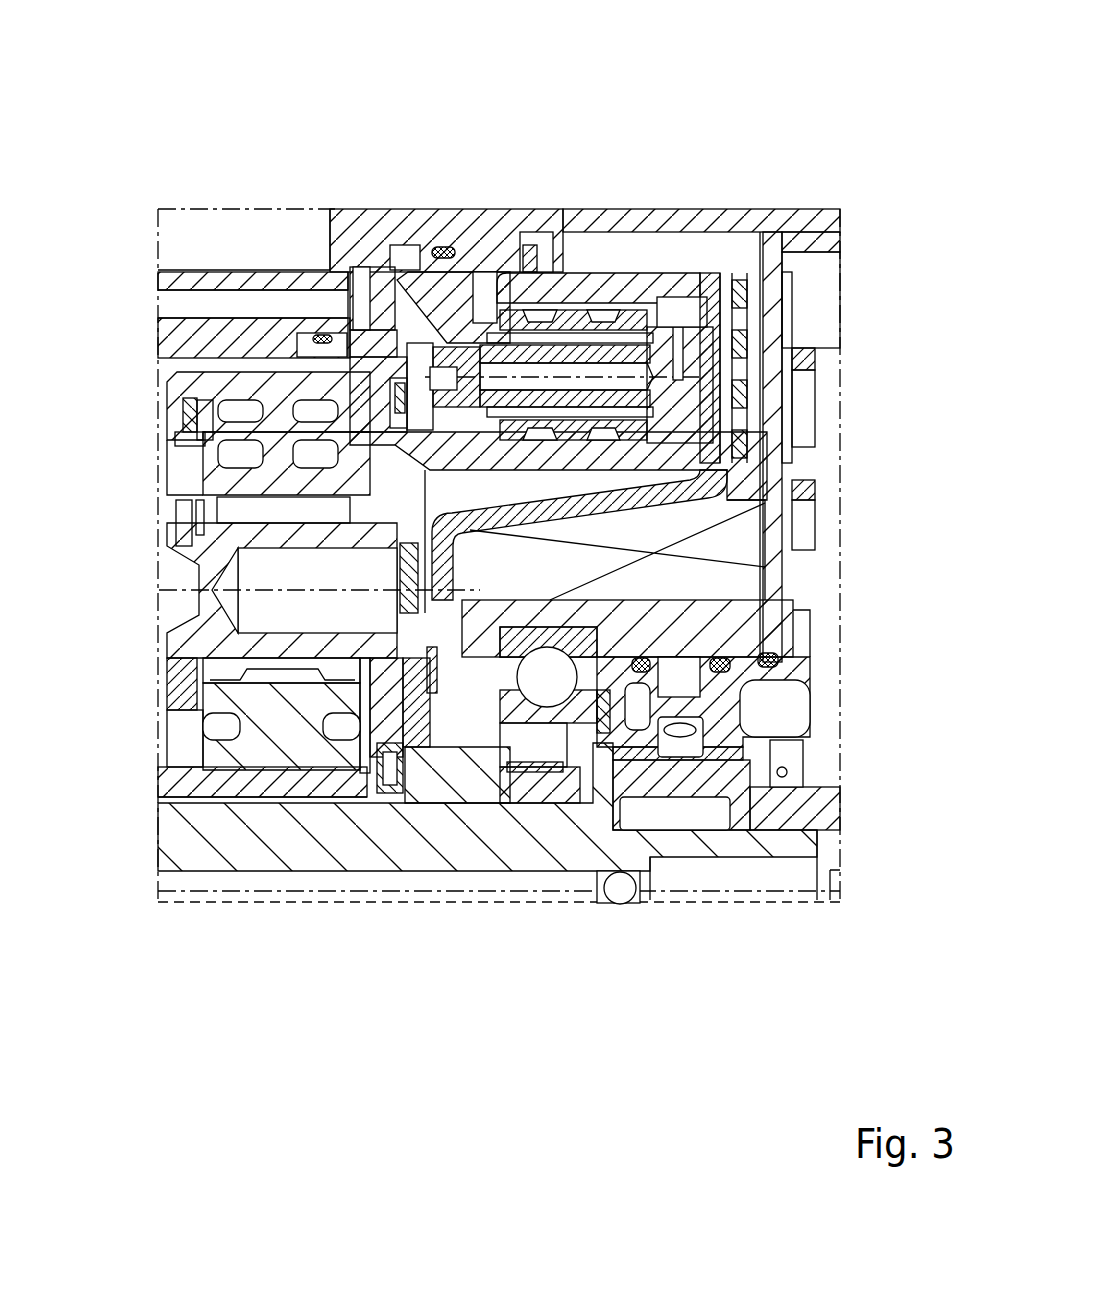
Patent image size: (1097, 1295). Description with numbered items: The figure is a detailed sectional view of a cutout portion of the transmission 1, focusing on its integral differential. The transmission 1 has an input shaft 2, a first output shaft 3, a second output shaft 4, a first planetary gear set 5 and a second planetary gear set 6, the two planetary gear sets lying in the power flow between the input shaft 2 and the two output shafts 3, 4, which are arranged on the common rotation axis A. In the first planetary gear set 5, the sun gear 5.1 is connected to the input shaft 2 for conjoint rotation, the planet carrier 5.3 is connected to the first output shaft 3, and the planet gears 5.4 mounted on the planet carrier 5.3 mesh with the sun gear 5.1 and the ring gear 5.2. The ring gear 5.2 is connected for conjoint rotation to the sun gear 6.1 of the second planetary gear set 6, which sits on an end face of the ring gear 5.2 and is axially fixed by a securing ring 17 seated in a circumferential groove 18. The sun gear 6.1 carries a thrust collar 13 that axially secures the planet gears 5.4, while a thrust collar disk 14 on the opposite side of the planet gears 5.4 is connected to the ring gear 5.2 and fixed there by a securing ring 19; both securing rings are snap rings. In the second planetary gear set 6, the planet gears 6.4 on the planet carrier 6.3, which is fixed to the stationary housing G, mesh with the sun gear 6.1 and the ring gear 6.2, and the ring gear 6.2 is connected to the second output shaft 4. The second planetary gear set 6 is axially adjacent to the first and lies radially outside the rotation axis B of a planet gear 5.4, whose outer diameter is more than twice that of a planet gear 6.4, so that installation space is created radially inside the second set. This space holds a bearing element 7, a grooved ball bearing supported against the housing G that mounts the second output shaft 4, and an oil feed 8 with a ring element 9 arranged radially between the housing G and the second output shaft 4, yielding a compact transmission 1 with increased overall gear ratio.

The transmission 1 is at (793, 130).
The input shaft 2 is at (148, 798).
The first output shaft 3 is at (352, 848).
The second output shaft 4 is at (797, 800).
The first planetary gear set 5 is at (238, 920).
The sun gear 5.1 is at (163, 769).
The ring gear 5.2 is at (220, 390).
The planet carrier 5.3 is at (432, 772).
The planet gears 5.4 is at (247, 480).
The second planetary gear set 6 is at (678, 256).
The sun gear 6.1 is at (600, 460).
The ring gear 6.2 is at (620, 290).
The planet carrier 6.3 is at (600, 455).
The planet gears 6.4 is at (600, 328).
The bearing element 7 is at (533, 733).
The oil feed 8 is at (850, 714).
The ring element 9 is at (720, 717).
The thrust collar 13 is at (348, 430).
The thrust collar disk 14 is at (185, 433).
The securing ring 17 is at (318, 333).
The circumferential groove 18 is at (402, 378).
The securing ring 19 is at (180, 412).
The common rotation axis A is at (722, 902).
The rotation axis B is at (182, 593).
The housing G is at (738, 630).